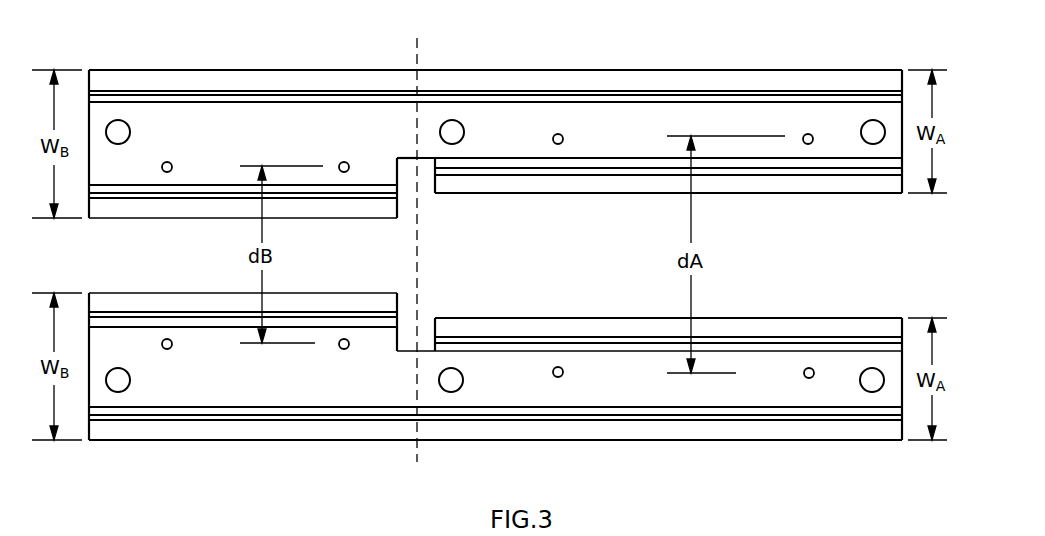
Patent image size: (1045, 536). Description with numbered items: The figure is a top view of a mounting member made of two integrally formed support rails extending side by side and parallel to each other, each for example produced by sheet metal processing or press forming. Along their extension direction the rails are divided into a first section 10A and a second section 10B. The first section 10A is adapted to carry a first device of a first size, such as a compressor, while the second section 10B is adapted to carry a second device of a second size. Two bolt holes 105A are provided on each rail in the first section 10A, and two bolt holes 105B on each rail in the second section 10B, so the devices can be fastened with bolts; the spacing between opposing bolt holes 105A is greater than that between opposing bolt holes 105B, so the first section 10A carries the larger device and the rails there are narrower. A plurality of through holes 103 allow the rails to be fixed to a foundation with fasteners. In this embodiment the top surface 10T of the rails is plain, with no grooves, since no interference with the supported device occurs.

The first section 10A is at (417, 40).
The second section 10B is at (89, 40).
The top surface 10T is at (229, 378).
The through holes 103 is at (873, 140).
The bolt holes 105A is at (556, 145).
The bolt holes 105B is at (164, 172).